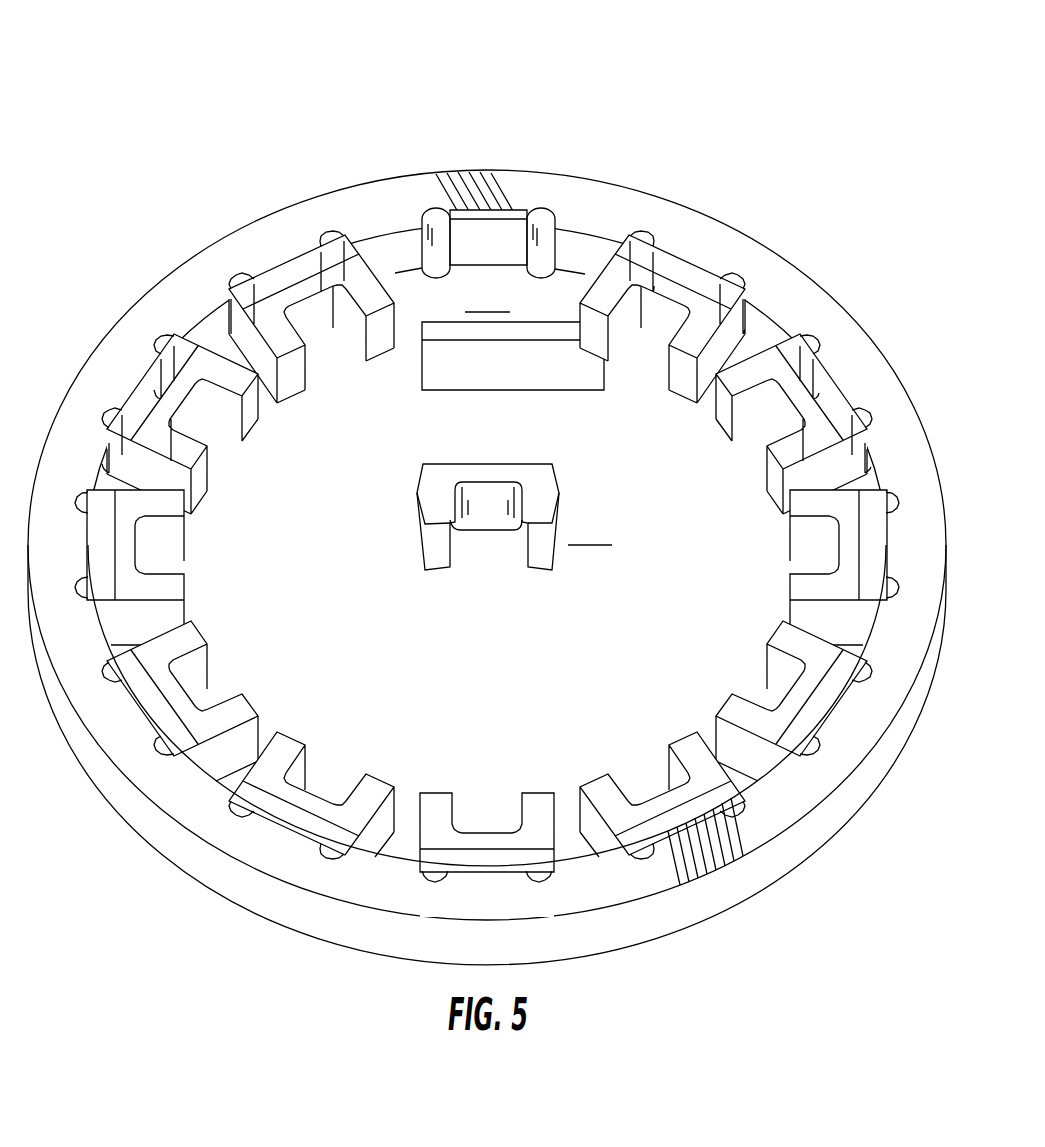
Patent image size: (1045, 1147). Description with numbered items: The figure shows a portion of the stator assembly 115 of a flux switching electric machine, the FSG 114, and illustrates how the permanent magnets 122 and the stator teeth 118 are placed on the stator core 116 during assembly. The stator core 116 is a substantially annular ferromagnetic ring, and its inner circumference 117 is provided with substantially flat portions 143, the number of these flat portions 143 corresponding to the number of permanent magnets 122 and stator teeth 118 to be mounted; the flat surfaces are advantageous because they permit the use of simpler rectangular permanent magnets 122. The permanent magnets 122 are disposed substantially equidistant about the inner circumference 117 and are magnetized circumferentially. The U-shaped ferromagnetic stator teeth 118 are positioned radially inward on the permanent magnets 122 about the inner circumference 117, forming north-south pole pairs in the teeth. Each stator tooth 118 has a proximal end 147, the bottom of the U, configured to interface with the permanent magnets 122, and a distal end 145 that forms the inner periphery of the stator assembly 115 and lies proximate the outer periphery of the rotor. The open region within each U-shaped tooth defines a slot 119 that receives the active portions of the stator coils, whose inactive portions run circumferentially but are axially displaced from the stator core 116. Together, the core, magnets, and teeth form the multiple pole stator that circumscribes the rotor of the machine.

The FSG 114 is at (756, 93).
The stator assembly 115 is at (897, 370).
The stator core 116 is at (812, 838).
The inner circumference 117 is at (766, 316).
The stator teeth 118 is at (612, 256).
The slots 119 is at (220, 665).
The permanent magnets 122 is at (268, 283).
The substantially flat portions 143 is at (838, 703).
The distal end 145 is at (690, 348).
The proximal end 147 is at (178, 722).